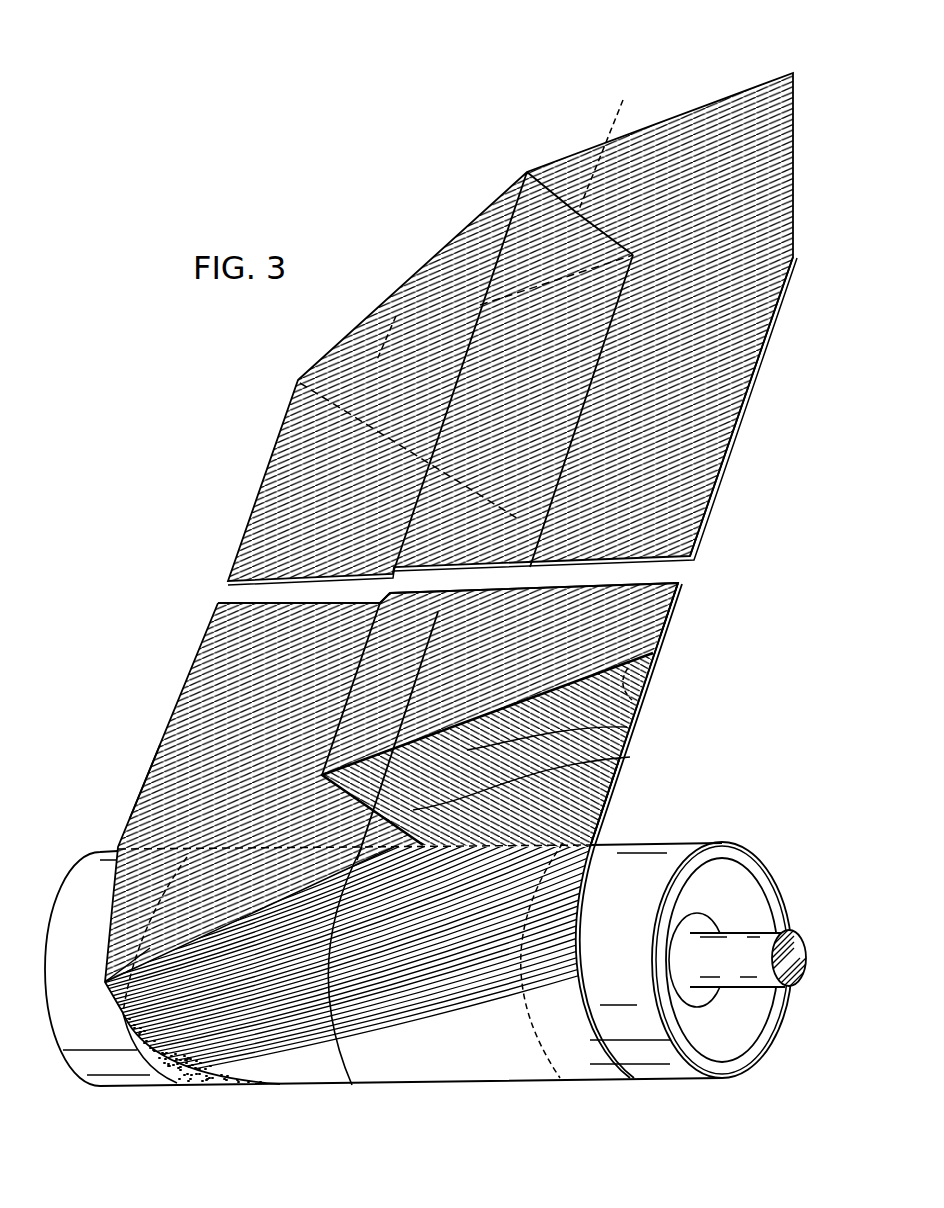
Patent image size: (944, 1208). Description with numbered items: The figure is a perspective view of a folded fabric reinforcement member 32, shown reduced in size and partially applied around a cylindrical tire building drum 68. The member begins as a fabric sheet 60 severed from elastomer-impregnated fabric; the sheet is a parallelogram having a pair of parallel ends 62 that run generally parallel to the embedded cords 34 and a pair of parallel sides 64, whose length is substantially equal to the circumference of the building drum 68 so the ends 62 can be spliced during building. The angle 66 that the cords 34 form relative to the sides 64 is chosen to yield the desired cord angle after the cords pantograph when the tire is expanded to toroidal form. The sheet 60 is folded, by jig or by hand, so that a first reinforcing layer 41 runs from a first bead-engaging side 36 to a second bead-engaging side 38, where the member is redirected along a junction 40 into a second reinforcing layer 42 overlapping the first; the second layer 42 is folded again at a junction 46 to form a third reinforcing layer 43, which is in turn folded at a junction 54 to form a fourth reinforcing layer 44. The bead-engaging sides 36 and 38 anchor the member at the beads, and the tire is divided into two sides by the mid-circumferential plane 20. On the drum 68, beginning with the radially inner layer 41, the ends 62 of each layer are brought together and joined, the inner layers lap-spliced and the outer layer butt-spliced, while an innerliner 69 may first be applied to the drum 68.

The mid-circumferential plane 20 is at (346, 1084).
The fabric reinforcement member 32 is at (272, 443).
The cords 34 is at (207, 700).
The first bead-engaging side 36 is at (667, 597).
The second bead-engaging side 38 is at (220, 623).
The junction of first and second layers 40 is at (147, 804).
The first reinforcing layer 41 is at (587, 818).
The second reinforcing layer 42 is at (200, 768).
The third reinforcing layer 43 is at (613, 757).
The fourth reinforcing layer 44 is at (658, 647).
The junction of second and third layers 46 is at (630, 727).
The junction of third and fourth layers 54 is at (368, 630).
The fabric sheet 60 is at (600, 787).
The parallel ends 62 is at (637, 132).
The parallel sides 64 is at (757, 358).
The cord angle 66 is at (700, 528).
The tire building drum 68 is at (680, 850).
The innerliner 69 is at (180, 1086).